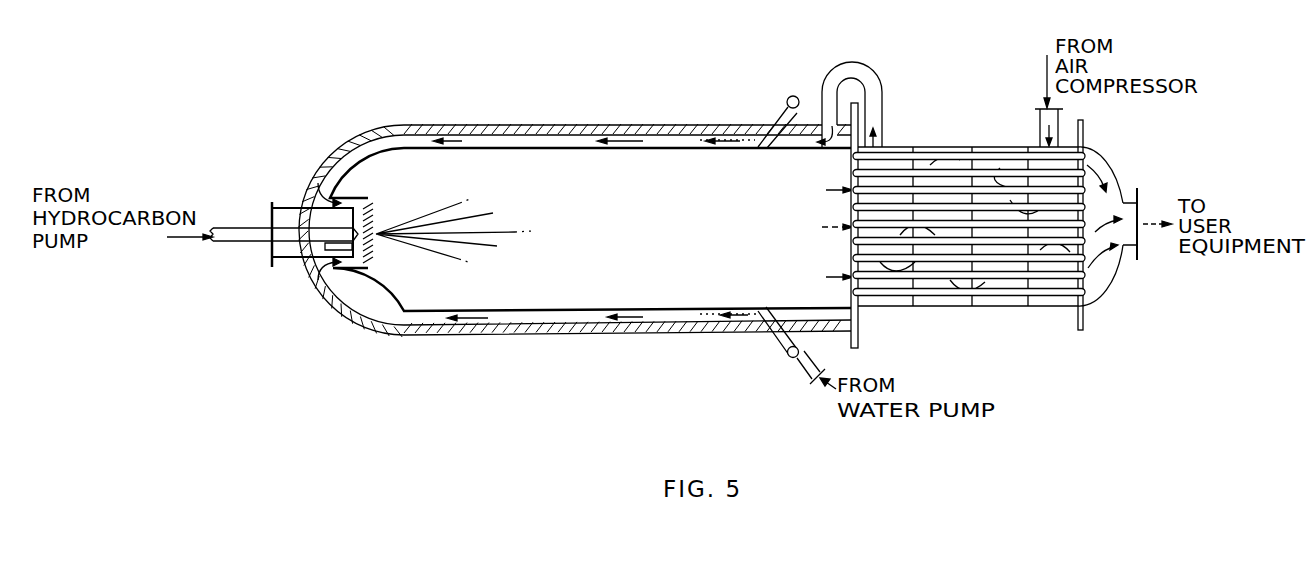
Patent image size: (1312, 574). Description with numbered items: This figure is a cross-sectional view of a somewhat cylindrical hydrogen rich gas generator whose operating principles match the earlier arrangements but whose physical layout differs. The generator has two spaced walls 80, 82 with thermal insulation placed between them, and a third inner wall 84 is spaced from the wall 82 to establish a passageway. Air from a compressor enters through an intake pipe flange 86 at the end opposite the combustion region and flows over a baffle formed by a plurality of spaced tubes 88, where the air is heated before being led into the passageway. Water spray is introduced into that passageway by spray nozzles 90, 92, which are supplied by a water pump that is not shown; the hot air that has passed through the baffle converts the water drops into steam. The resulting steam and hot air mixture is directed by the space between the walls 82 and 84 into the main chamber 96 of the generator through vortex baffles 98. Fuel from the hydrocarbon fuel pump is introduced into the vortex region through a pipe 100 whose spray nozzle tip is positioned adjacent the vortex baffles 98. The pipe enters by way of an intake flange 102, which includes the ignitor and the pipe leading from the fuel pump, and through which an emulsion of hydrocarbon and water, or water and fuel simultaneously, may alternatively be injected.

The outer wall 80 is at (537, 125).
The second wall 82 is at (540, 140).
The third inner wall 84 is at (602, 150).
The intake pipe flange 86 is at (1040, 108).
The spaced tubes 88 is at (920, 155).
The spray nozzle 90 is at (789, 99).
The spray nozzle 92 is at (782, 347).
The main chamber 96 is at (697, 237).
The vortex baffles 98 is at (372, 202).
The pipe 100 is at (238, 245).
The intake flange 102 is at (290, 208).